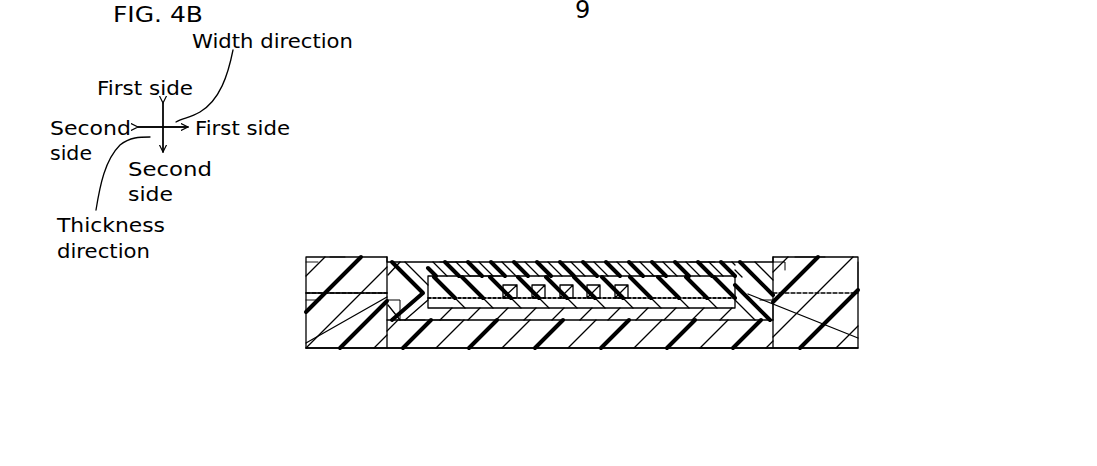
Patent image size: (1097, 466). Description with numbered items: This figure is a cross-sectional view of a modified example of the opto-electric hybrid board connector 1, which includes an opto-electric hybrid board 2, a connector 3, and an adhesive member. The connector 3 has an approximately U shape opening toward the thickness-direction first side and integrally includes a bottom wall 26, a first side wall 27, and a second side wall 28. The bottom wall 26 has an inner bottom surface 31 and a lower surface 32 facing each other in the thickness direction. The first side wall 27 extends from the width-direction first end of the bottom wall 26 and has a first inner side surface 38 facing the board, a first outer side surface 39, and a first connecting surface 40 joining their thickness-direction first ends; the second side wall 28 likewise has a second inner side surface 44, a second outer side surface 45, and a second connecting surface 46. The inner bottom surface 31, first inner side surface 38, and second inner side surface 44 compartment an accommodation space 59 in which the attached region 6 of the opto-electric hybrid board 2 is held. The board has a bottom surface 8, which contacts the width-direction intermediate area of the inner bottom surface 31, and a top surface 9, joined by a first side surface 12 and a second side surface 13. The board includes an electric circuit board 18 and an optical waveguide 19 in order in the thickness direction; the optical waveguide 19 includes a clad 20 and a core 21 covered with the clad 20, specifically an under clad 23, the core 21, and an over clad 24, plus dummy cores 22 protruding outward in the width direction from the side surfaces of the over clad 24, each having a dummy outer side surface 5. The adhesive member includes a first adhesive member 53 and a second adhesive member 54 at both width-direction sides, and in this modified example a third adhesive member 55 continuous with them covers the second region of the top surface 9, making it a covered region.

The opto-electric hybrid board connector 1 is at (607, 441).
The opto-electric hybrid board 2 is at (620, 262).
The connector 3 is at (338, 255).
The dummy outer side surface 5 is at (306, 293).
The attached region 6 is at (580, 262).
The bottom surface 8 is at (540, 350).
The top surface 9 is at (636, 262).
The first side surface 12 is at (858, 338).
The second side surface 13 is at (306, 343).
The electric circuit board 18 is at (440, 322).
The optical waveguide 19 is at (481, 264).
The clad 20 is at (593, 170).
The core 21 is at (652, 262).
The dummy core 22 is at (418, 262).
The under clad 23 is at (503, 262).
The over clad 24 is at (548, 262).
The bottom wall 26 is at (716, 350).
The first side wall 27 is at (812, 256).
The second side wall 28 is at (306, 256).
The inner bottom surface 31 is at (700, 262).
The lower surface 32 is at (412, 350).
The first inner side surface 38 is at (765, 262).
The first outer side surface 39 is at (858, 275).
The first connecting surface 40 is at (830, 258).
The second inner side surface 44 is at (402, 268).
The second outer side surface 45 is at (302, 270).
The second connecting surface 46 is at (318, 255).
The first adhesive member 53 is at (750, 328).
The second adhesive member 54 is at (405, 322).
The third adhesive member 55 is at (650, 262).
The accommodation space 59 is at (456, 256).